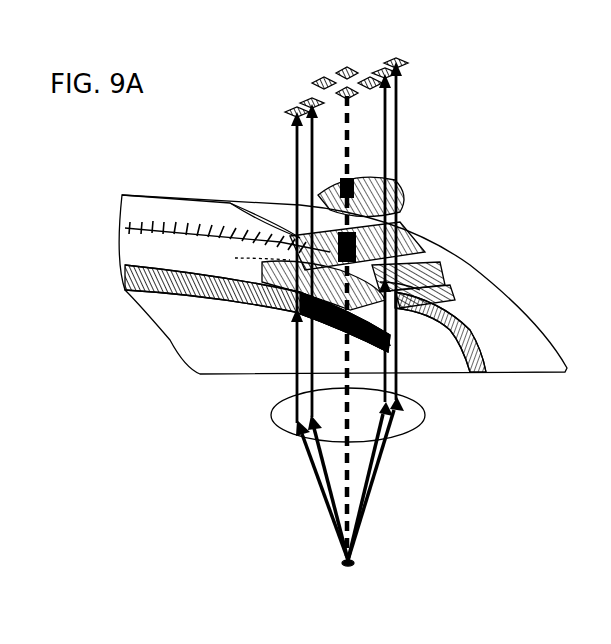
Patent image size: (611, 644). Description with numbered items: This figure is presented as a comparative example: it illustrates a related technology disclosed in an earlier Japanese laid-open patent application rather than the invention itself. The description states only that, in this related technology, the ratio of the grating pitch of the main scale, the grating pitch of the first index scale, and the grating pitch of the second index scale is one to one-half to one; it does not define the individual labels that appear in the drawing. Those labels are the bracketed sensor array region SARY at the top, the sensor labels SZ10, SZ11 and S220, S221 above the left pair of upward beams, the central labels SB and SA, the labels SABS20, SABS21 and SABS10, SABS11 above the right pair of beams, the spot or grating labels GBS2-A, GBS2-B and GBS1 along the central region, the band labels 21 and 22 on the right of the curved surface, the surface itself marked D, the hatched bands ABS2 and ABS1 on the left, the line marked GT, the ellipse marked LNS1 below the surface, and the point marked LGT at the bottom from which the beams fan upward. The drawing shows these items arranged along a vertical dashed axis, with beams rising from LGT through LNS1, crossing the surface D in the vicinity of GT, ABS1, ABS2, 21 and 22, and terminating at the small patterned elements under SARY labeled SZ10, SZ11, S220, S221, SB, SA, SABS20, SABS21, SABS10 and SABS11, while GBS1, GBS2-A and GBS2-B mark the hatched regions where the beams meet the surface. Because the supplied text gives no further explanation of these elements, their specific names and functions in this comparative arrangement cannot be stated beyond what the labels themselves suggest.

The sensor array SARY is at (195, 18).
The sensor SZ10 is at (273, 77).
The sensor SZ11 is at (305, 98).
The sensor S220 is at (260, 97).
The sensor S221 is at (288, 108).
The sub beam sensor SB is at (322, 78).
The main beam sensor SA is at (345, 75).
The sensor SABS20 is at (366, 53).
The sensor SABS21 is at (381, 68).
The sensor SABS10 is at (400, 46).
The sensor SABS11 is at (397, 58).
The beam spot GBS2-A is at (365, 178).
The beam spot GBS2-B is at (368, 205).
The beam spot GBS1 is at (400, 234).
The track region 21 is at (410, 272).
The track region 22 is at (412, 288).
The optical disc D is at (522, 298).
The address band ABS2 is at (200, 268).
The address band ABS1 is at (205, 270).
The groove track GT is at (250, 235).
The objective lens LNS1 is at (425, 418).
The light source LGT is at (350, 483).